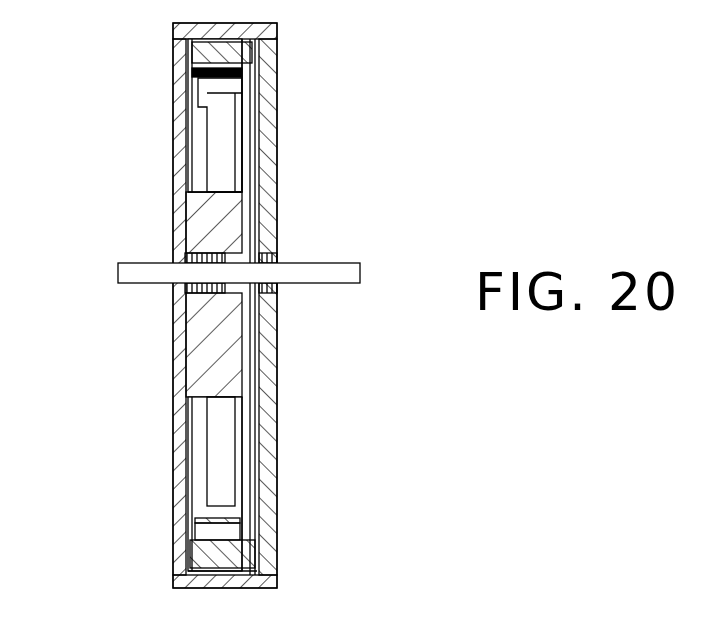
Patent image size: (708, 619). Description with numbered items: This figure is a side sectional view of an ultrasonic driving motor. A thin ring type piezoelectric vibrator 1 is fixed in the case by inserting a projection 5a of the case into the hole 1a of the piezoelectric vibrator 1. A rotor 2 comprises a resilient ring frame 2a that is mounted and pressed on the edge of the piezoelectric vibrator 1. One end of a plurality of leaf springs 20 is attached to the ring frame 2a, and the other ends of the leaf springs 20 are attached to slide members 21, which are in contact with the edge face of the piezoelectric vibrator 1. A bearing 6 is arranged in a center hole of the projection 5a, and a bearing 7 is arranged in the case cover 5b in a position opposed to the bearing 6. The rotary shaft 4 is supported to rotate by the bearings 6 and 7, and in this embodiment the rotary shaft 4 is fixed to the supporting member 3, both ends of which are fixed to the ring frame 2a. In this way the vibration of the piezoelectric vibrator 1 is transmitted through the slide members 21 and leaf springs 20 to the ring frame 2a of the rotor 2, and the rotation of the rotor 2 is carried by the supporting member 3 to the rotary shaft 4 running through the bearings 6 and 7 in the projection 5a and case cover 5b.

The ring type piezoelectric vibrator 1 is at (222, 418).
The hole 1a is at (228, 192).
The rotor 2 is at (160, 305).
The ring frame 2a is at (256, 47).
The supporting member 3 is at (293, 307).
The rotary shaft 4 is at (346, 280).
The projection 5a is at (182, 233).
The case cover 5b is at (264, 384).
The bearing 6 is at (185, 288).
The bearing 7 is at (277, 288).
The leaf springs 20 is at (194, 45).
The slide members 21 is at (192, 72).